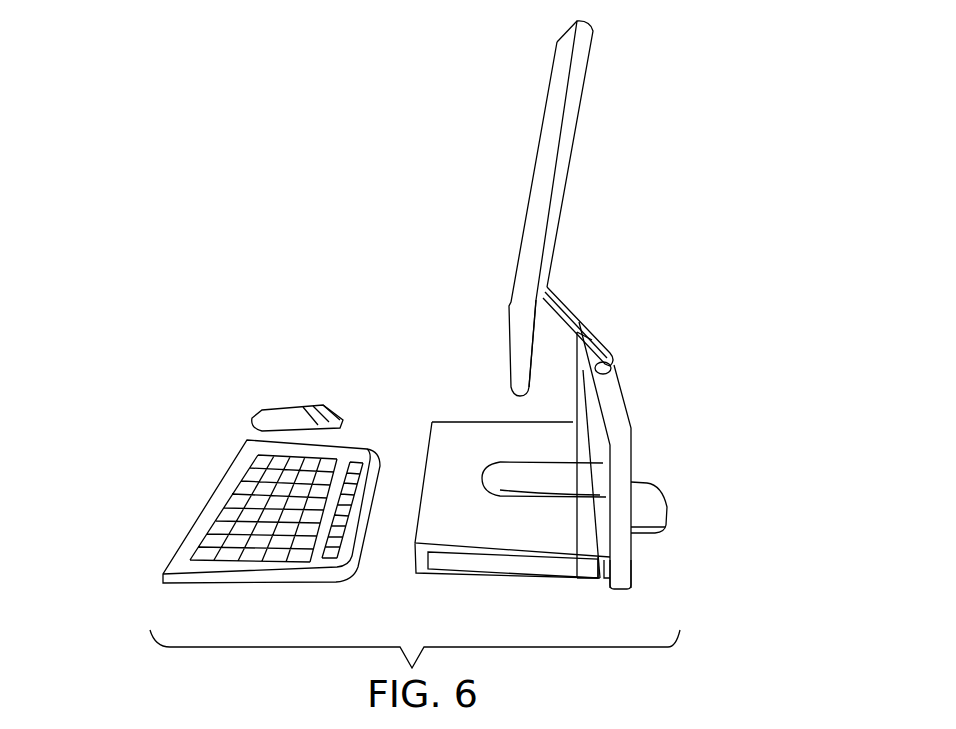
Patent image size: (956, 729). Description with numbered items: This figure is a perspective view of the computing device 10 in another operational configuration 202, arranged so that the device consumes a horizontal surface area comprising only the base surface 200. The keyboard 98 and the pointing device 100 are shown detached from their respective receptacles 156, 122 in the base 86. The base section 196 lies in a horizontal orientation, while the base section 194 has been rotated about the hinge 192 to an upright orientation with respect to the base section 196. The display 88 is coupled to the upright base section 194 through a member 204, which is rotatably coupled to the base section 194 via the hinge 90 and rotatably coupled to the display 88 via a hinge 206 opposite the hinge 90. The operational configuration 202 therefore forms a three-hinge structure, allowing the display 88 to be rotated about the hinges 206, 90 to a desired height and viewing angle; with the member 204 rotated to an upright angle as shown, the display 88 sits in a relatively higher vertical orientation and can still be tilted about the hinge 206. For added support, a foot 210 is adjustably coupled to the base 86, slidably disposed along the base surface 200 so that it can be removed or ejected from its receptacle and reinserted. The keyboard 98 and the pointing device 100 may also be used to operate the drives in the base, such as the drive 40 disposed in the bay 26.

The computing device 10 is at (682, 62).
The bay 26 is at (512, 563).
The drive 40 is at (512, 563).
The base 86 is at (653, 607).
The display 88 is at (550, 75).
The hinge 90 is at (615, 390).
The keyboard 98 is at (242, 587).
The pointing device 100 is at (260, 410).
The receptacle 122 is at (573, 393).
The receptacle 156 is at (490, 465).
The hinge 192 is at (620, 598).
The base section 194 is at (637, 572).
The base section 196 is at (565, 582).
The base surface 200 is at (463, 580).
The operational configuration 202 is at (318, 222).
The member 204 is at (585, 320).
The hinge 206 is at (548, 288).
The foot 210 is at (650, 500).